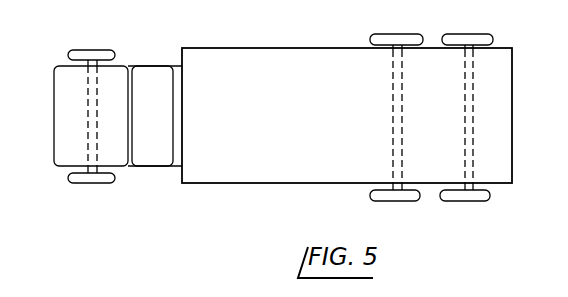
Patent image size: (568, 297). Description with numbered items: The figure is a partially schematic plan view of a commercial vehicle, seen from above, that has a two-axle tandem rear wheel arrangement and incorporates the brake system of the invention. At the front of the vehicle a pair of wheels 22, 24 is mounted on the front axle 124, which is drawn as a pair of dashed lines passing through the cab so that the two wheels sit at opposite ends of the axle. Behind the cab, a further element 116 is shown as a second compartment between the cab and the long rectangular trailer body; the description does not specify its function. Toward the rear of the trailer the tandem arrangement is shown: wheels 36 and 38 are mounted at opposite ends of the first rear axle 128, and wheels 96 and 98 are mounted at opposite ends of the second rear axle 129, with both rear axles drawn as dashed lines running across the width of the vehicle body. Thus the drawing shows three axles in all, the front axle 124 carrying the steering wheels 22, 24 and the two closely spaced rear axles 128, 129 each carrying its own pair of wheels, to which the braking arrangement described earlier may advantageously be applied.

The wheel 22 is at (72, 177).
The wheel 24 is at (98, 52).
The wheel 36 is at (377, 201).
The wheel 38 is at (400, 35).
The wheel 96 is at (490, 201).
The wheel 98 is at (490, 36).
The cab section 116 is at (145, 68).
The front axle 124 is at (87, 97).
The rear axle 128 is at (393, 73).
The rear axle 129 is at (474, 80).